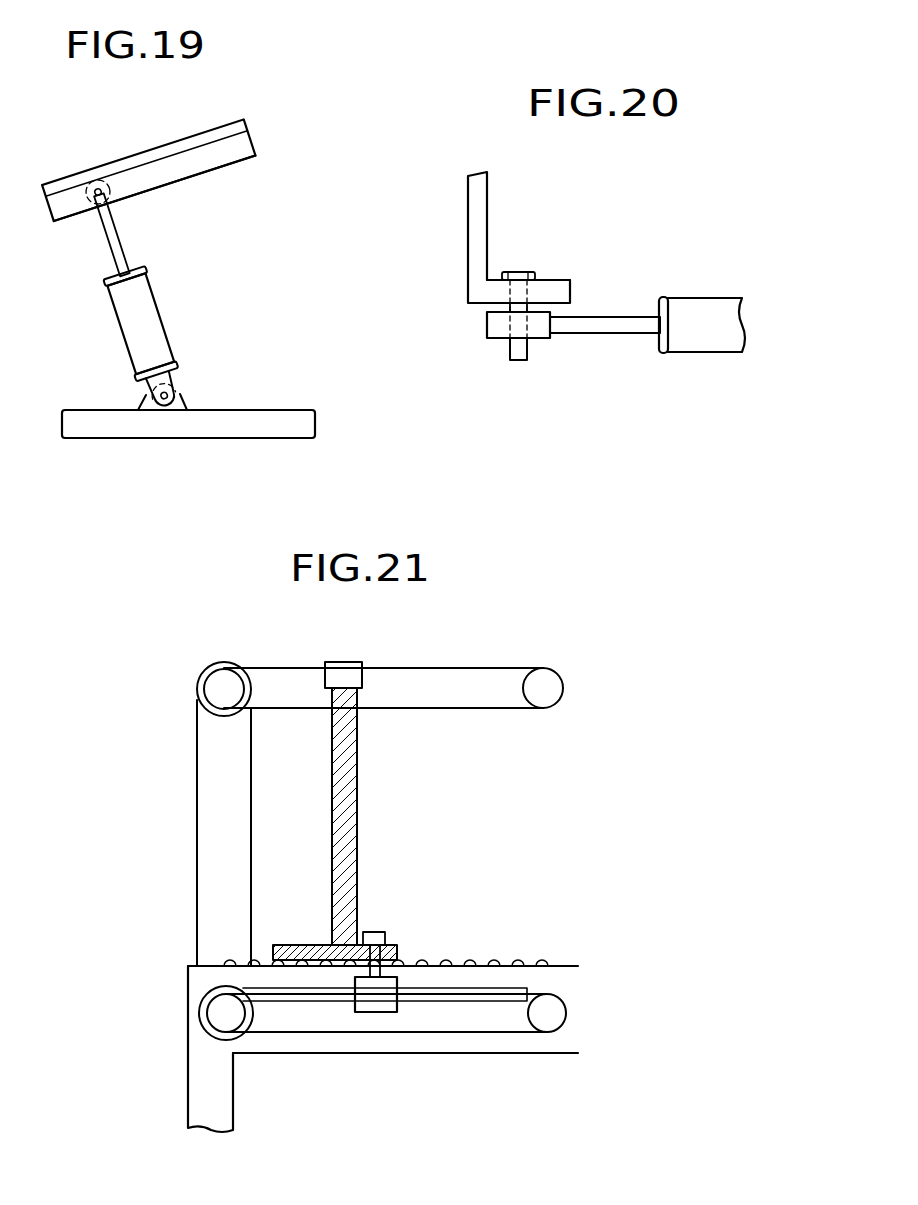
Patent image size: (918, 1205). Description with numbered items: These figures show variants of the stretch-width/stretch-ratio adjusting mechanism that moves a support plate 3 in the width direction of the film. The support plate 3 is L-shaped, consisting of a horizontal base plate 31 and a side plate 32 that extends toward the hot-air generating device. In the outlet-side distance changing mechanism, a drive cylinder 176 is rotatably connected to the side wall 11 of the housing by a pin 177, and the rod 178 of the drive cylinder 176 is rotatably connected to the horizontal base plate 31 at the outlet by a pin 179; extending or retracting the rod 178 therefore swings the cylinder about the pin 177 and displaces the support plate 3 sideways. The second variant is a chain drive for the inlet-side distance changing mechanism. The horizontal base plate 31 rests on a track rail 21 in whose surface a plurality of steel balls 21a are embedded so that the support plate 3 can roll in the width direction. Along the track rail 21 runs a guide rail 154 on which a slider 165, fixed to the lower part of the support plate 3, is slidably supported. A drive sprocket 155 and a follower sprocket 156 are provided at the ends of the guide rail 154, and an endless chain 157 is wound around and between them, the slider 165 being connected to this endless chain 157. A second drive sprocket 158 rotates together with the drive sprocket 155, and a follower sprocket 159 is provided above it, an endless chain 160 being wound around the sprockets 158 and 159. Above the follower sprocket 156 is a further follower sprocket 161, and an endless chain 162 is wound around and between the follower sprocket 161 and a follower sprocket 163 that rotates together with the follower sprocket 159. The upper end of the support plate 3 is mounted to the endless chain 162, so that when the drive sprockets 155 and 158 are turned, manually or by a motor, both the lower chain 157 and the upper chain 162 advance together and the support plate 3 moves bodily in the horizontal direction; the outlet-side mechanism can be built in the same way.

In FIG. 19, the support plate 3 is at (236, 170).
In FIG. 21, the support plate 3 is at (357, 818).
In FIG. 19, the horizontal base plate 31 is at (182, 174).
In FIG. 20, the horizontal base plate 31 is at (557, 285).
In FIG. 19, the side plate 32 is at (158, 145).
In FIG. 20, the side plate 32 is at (483, 214).
In FIG. 19, the side wall of housing 11 is at (276, 418).
In FIG. 19, the drive cylinder 176 is at (152, 320).
In FIG. 20, the drive cylinder 176 is at (695, 305).
In FIG. 19, the pin 177 is at (172, 392).
In FIG. 19, the rod 178 is at (107, 233).
In FIG. 20, the rod 178 is at (620, 323).
In FIG. 19, the pin 179 is at (95, 182).
In FIG. 20, the pin 179 is at (518, 363).
In FIG. 21, the track rail 21 is at (530, 964).
In FIG. 21, the steel balls 21a is at (283, 958).
In FIG. 21, the guide rail 154 is at (452, 987).
In FIG. 21, the drive sprocket 155 is at (222, 1020).
In FIG. 21, the follower sprocket 156 is at (560, 1015).
In FIG. 21, the endless chain 157 is at (433, 1033).
In FIG. 21, the drive sprocket 158 is at (198, 1007).
In FIG. 21, the follower sprocket 159 is at (228, 668).
In FIG. 21, the endless chain 160 is at (197, 817).
In FIG. 21, the follower sprocket 161 is at (543, 668).
In FIG. 21, the endless chain 162 is at (430, 667).
In FIG. 21, the follower sprocket 163 is at (215, 683).
In FIG. 21, the slider 165 is at (375, 1005).